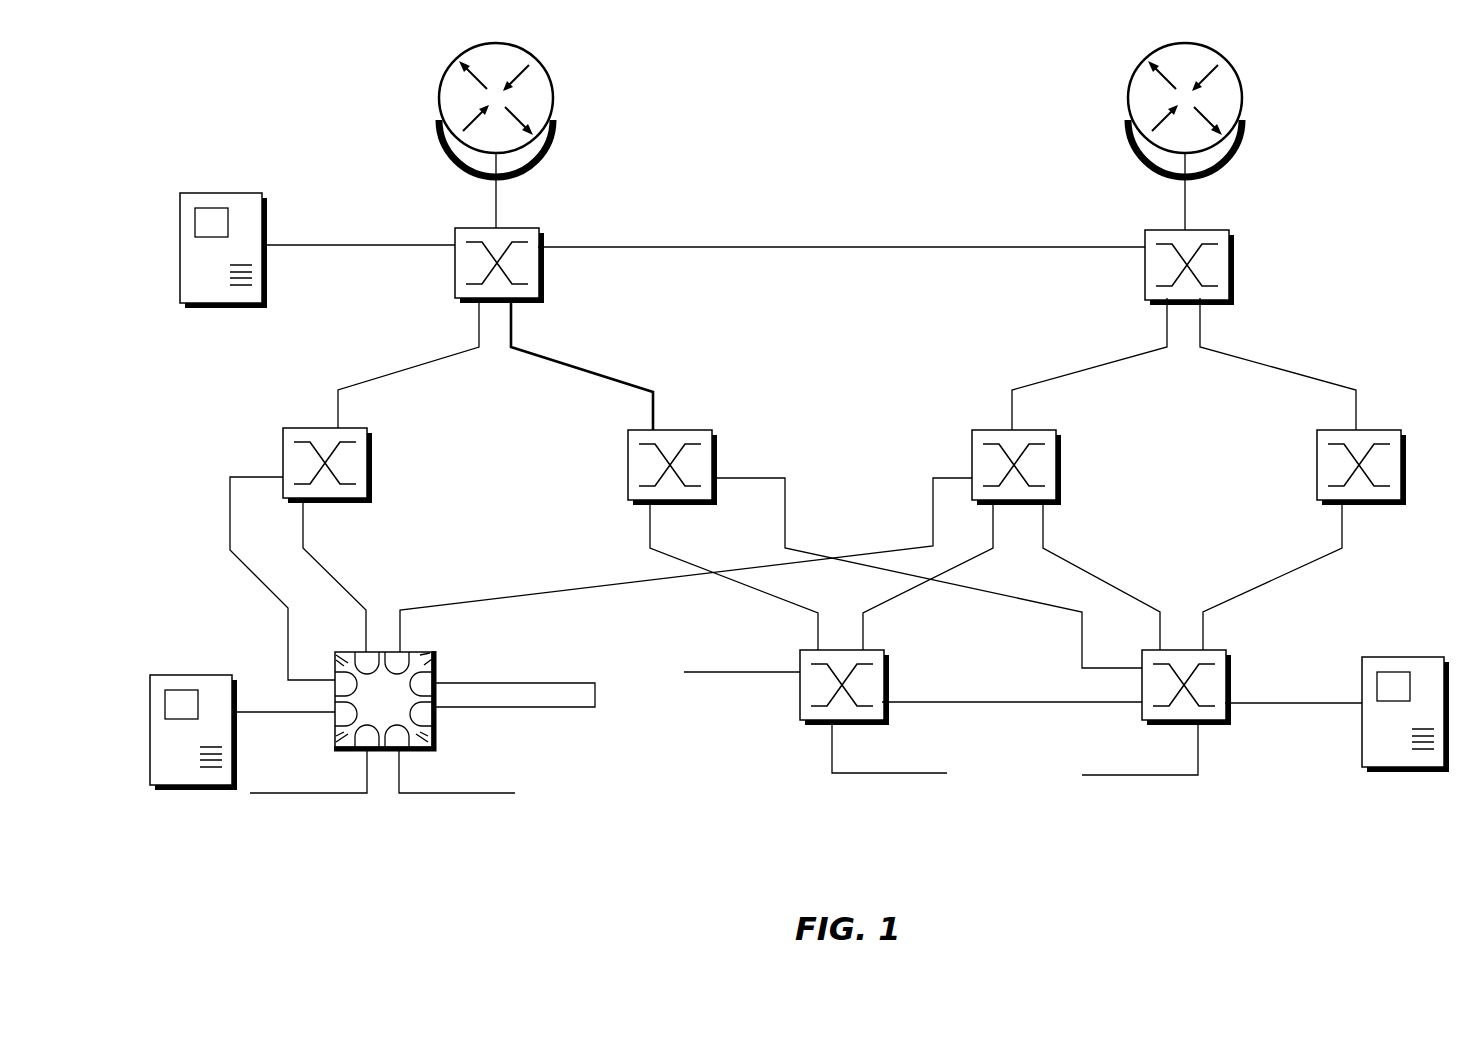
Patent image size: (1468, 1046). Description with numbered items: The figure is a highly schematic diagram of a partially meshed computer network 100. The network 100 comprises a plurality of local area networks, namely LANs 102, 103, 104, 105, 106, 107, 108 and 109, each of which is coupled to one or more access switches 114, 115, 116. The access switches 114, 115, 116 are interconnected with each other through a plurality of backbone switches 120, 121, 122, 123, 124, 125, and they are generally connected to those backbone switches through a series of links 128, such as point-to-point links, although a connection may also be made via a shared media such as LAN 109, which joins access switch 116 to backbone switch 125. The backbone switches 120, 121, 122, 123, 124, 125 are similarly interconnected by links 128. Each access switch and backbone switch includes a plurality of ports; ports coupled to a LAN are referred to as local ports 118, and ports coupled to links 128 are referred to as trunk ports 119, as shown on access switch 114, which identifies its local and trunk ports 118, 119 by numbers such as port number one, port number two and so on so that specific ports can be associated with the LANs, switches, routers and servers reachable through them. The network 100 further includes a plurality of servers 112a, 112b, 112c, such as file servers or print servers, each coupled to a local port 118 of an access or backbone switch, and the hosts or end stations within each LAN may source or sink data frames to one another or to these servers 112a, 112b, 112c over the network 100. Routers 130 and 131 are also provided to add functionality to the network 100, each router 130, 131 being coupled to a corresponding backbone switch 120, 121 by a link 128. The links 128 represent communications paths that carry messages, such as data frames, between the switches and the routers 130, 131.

The computer network 100 is at (766, 84).
The local area network 102 is at (308, 782).
The local area network 103 is at (457, 782).
The local area network 104 is at (513, 708).
The local area network 105 is at (742, 660).
The local area network 106 is at (889, 746).
The local area network 107 is at (1012, 688).
The local area network 108 is at (1140, 747).
The local area network 109 is at (1261, 572).
The server 112a is at (190, 675).
The server 112b is at (222, 193).
The server 112c is at (1400, 657).
The access switch 114 is at (405, 697).
The access switch 115 is at (884, 682).
The access switch 116 is at (1228, 664).
The local port 118 is at (436, 664).
The trunk port 119 is at (343, 650).
The backbone switch 120 is at (540, 268).
The backbone switch 121 is at (1230, 268).
The backbone switch 122 is at (369, 462).
The backbone switch 123 is at (714, 446).
The backbone switch 124 is at (1059, 462).
The backbone switch 125 is at (1400, 446).
The link 128 is at (497, 203).
The router 130 is at (533, 137).
The router 131 is at (1222, 137).